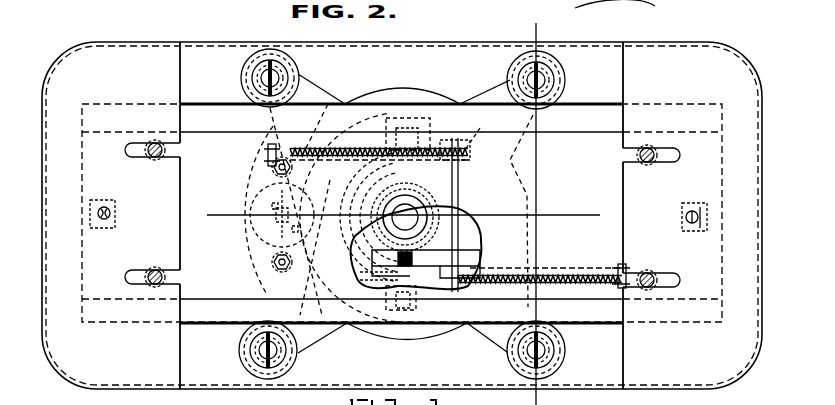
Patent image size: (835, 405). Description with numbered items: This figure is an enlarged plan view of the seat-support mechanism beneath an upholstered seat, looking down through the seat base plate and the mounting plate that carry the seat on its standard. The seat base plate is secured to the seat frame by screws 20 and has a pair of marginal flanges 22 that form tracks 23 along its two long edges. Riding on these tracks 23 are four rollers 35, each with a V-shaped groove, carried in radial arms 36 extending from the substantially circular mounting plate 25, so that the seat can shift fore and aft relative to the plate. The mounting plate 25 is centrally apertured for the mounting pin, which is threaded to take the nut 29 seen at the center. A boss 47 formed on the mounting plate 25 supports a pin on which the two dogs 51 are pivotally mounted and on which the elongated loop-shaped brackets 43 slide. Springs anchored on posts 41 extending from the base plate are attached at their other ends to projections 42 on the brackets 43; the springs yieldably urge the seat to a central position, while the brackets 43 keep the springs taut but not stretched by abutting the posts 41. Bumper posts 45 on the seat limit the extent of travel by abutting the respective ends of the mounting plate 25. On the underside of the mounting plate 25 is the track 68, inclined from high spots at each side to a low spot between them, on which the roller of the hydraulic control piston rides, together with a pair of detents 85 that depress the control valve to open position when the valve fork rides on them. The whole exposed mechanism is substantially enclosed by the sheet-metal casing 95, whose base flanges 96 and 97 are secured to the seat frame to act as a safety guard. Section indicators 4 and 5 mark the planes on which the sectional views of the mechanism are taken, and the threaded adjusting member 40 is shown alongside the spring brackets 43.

The casing 95 is at (82, 46).
The screws 20 is at (152, 143).
The marginal flanges 22 is at (196, 112).
The tracks 23 is at (226, 103).
The rollers 35 is at (245, 70).
The track 68 is at (321, 78).
The mounting plate 25 is at (420, 90).
The radial arms 36 is at (495, 90).
The section line 4- 4 is at (539, 30).
The section line 5- 5 is at (221, 224).
The adjusting screws 40 is at (540, 272).
The posts 41 is at (266, 157).
The projections 42 is at (440, 306).
The brackets 43 is at (576, 259).
The nut 29 is at (425, 213).
The boss 47 is at (470, 242).
The bumper posts 45 is at (88, 208).
The base flange 96 is at (180, 193).
The base flange 97 is at (623, 195).
The detents 85 is at (271, 262).
The dogs 51 is at (362, 278).